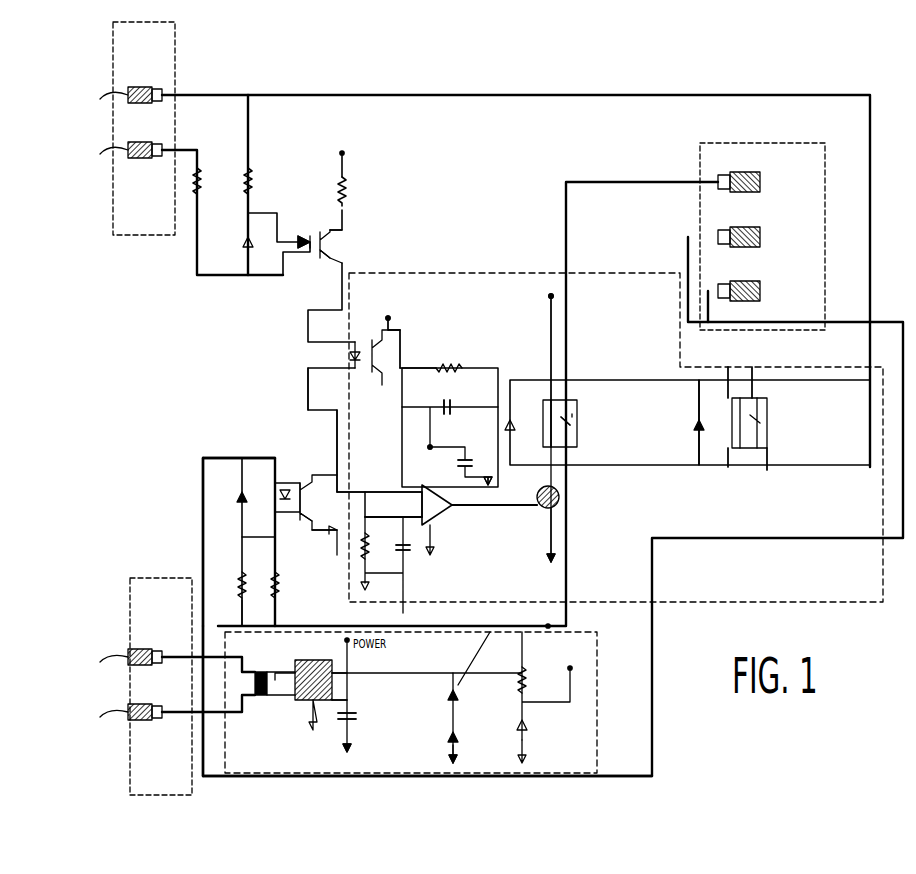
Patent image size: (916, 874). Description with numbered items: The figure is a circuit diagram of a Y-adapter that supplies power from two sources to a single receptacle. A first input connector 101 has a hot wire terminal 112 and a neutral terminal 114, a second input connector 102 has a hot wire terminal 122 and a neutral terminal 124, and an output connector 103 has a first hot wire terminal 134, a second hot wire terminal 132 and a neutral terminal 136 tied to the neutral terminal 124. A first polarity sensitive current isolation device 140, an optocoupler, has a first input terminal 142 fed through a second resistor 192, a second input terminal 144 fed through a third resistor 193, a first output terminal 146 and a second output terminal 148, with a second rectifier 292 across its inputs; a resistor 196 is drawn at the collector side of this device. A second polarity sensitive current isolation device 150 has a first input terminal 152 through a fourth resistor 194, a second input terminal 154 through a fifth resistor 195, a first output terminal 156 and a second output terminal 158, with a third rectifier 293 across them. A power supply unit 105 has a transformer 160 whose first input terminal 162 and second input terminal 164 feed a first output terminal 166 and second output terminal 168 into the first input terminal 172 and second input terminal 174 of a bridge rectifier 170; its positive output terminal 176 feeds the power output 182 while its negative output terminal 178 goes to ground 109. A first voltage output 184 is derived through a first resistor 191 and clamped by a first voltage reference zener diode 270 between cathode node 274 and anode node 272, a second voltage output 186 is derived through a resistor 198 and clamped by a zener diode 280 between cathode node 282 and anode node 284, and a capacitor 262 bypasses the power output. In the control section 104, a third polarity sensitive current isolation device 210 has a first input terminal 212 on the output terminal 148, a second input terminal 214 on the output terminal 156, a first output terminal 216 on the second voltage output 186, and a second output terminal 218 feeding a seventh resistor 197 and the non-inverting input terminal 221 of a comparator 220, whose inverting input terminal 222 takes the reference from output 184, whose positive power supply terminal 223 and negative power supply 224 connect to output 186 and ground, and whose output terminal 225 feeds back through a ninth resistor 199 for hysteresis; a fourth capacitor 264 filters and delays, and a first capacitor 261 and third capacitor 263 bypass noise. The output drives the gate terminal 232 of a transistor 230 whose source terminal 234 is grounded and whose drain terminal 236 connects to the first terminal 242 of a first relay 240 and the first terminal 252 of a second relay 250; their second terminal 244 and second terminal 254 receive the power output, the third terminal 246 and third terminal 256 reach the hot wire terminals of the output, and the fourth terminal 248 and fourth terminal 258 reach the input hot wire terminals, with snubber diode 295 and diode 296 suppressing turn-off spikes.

The first input connector 101 is at (178, 57).
The second input connector 102 is at (145, 580).
The output connector 103 is at (716, 143).
The control section 104 is at (514, 271).
The power supply unit 105 is at (500, 778).
The ground 109 is at (345, 779).
The hot wire terminal 112 is at (124, 92).
The neutral terminal 114 is at (124, 146).
The hot wire terminal 122 is at (124, 657).
The neutral terminal 124 is at (124, 712).
The second hot wire terminal 132 is at (745, 172).
The first hot wire terminal 134 is at (765, 282).
The neutral terminal 136 is at (765, 225).
The first polarity sensitive current isolation device 140 is at (293, 297).
The first input terminal 142 is at (306, 234).
The second input terminal 144 is at (298, 277).
The first output terminal 146 is at (355, 235).
The second output terminal 148 is at (402, 292).
The second polarity sensitive current isolation device 150 is at (300, 537).
The first input terminal 152 is at (280, 470).
The second input terminal 154 is at (244, 472).
The first output terminal 156 is at (320, 475).
The second output terminal 158 is at (350, 538).
The transformer 160 is at (260, 779).
The first input terminal 162 is at (240, 620).
The second input terminal 164 is at (252, 712).
The first output terminal 166 is at (274, 620).
The second output terminal 168 is at (296, 712).
The bridge rectifier 170 is at (322, 735).
The first input terminal 172 is at (300, 660).
The second input terminal 174 is at (316, 730).
The positive output terminal 176 is at (342, 670).
The negative output terminal 178 is at (349, 700).
The power output 182 is at (554, 298).
The first voltage output 184 is at (392, 602).
The second voltage output 186 is at (350, 152).
The first resistor 191 is at (453, 703).
The second resistor 192 is at (253, 168).
The third resistor 193 is at (203, 168).
The fourth resistor 194 is at (200, 586).
The fifth resistor 195 is at (238, 570).
The resistor R6 196 is at (350, 178).
The seventh resistor 197 is at (345, 565).
The resistor 198 is at (458, 696).
The ninth resistor 199 is at (470, 366).
The third polarity sensitive current isolation device 210 is at (345, 430).
The first input terminal 212 is at (330, 344).
The second input terminal 214 is at (330, 375).
The first output terminal 216 is at (402, 334).
The second output terminal 218 is at (410, 356).
The comparator 220 is at (457, 534).
The non-inverting input terminal 221 is at (425, 482).
The inverting input terminal 222 is at (432, 522).
The positive power supply terminal 223 is at (430, 460).
The negative power supply 224 is at (415, 518).
The output terminal 225 is at (514, 507).
The transistor 230 is at (568, 535).
The gate terminal 232 is at (546, 512).
The source terminal 234 is at (572, 520).
The drain terminal 236 is at (592, 502).
The first relay 240 is at (797, 395).
The first terminal 242 is at (730, 470).
The second terminal 244 is at (729, 376).
The third terminal 246 is at (755, 382).
The fourth terminal 248 is at (768, 470).
The second relay 250 is at (620, 395).
The first terminal 252 is at (548, 452).
The second terminal 254 is at (548, 392).
The third terminal 256 is at (572, 394).
The fourth terminal 258 is at (560, 458).
The first capacitor 261 is at (398, 575).
The capacitor 262 is at (354, 727).
The third capacitor 263 is at (426, 447).
The fourth capacitor 264 is at (447, 404).
The first voltage reference zener diode 270 is at (500, 741).
The anode node 272 is at (375, 780).
The cathode node 274 is at (465, 678).
The zener diode 280 is at (535, 753).
The cathode node 282 is at (525, 706).
The anode node 284 is at (468, 731).
The second rectifier 292 is at (240, 276).
The third rectifier 293 is at (232, 462).
The diode 295 is at (456, 370).
The diode 296 is at (700, 418).